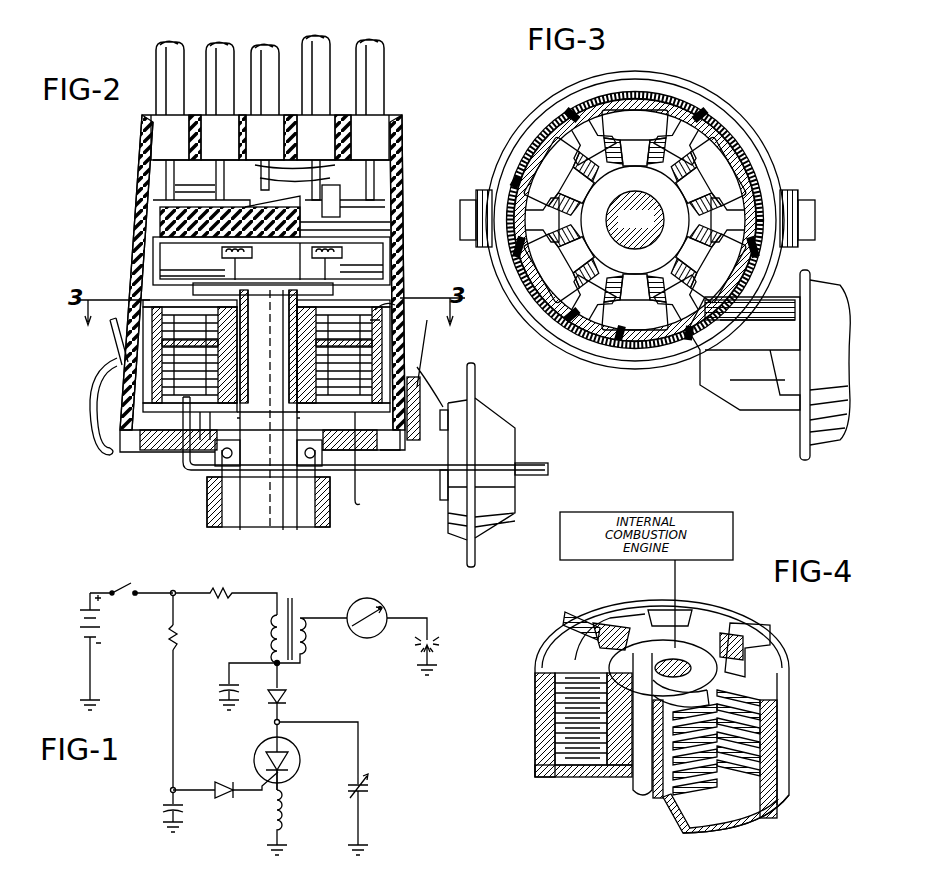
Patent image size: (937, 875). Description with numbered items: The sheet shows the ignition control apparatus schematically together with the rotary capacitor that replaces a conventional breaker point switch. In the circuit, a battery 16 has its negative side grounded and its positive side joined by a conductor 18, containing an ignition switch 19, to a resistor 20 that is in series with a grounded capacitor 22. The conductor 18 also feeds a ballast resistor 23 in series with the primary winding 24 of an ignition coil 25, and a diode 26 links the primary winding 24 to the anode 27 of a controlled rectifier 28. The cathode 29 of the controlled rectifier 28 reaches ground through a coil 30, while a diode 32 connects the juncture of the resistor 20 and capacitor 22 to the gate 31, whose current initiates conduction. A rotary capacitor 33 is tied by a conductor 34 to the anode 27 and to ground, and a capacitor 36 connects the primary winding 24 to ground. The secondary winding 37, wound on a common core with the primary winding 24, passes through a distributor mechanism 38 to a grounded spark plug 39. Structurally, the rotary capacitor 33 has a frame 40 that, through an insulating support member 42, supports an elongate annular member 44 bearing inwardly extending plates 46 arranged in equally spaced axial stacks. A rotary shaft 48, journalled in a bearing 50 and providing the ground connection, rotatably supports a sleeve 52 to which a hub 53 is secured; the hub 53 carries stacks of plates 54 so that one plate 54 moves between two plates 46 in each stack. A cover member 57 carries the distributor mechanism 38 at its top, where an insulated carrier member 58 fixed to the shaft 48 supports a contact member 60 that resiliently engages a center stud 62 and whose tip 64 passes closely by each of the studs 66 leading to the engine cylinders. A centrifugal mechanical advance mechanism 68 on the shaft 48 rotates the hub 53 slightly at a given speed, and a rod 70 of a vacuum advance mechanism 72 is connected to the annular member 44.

In FIG. 1, the battery 16 is at (78, 626).
In FIG. 1, the conductor 18 is at (173, 590).
In FIG. 1, the ignition switch 19 is at (125, 586).
In FIG. 1, the resistor 20 is at (166, 640).
In FIG. 1, the capacitor 22 is at (160, 805).
In FIG. 1, the ballast resistor 23 is at (221, 590).
In FIG. 1, the primary winding 24 is at (270, 628).
In FIG. 1, the ignition coil 25 is at (290, 597).
In FIG. 1, the diode 26 is at (290, 697).
In FIG. 1, the anode 27 is at (272, 722).
In FIG. 1, the controlled rectifier 28 is at (300, 752).
In FIG. 1, the cathode 29 is at (292, 780).
In FIG. 1, the coil 30 is at (285, 816).
In FIG. 1, the gate 31 is at (262, 778).
In FIG. 1, the diode 32 is at (224, 800).
In FIG. 1, the rotary capacitor 33 is at (371, 789).
In FIG. 2, the rotary capacitor 33 is at (116, 345).
In FIG. 3, the rotary capacitor 33 is at (716, 90).
In FIG. 4, the rotary capacitor 33 is at (741, 607).
In FIG. 1, the conductor 34 is at (360, 749).
In FIG. 2, the conductor 34 is at (363, 498).
In FIG. 1, the capacitor 36 is at (222, 683).
In FIG. 1, the secondary winding 37 is at (305, 641).
In FIG. 1, the distributor mechanism 38 is at (366, 597).
In FIG. 2, the distributor mechanism 38 is at (368, 218).
In FIG. 1, the spark plug 39 is at (445, 633).
In FIG. 2, the frame 40 is at (140, 452).
In FIG. 2, the insulating support member 42 is at (300, 416).
In FIG. 2, the annular member 44 is at (150, 378).
In FIG. 3, the annular member 44 is at (647, 108).
In FIG. 4, the annular member 44 is at (762, 764).
In FIG. 2, the plates 46 is at (380, 313).
In FIG. 3, the plates 46 is at (582, 135).
In FIG. 4, the plates 46 is at (625, 620).
In FIG. 2, the rotary shaft 48 is at (225, 523).
In FIG. 3, the rotary shaft 48 is at (648, 230).
In FIG. 4, the rotary shaft 48 is at (662, 655).
In FIG. 2, the bearing 50 is at (215, 460).
In FIG. 2, the sleeve 52 is at (241, 322).
In FIG. 3, the sleeve 52 is at (596, 221).
In FIG. 4, the sleeve 52 is at (632, 788).
In FIG. 2, the hub 53 is at (230, 372).
In FIG. 3, the hub 53 is at (612, 272).
In FIG. 4, the hub 53 is at (548, 737).
In FIG. 2, the plates 54 is at (190, 330).
In FIG. 3, the plates 54 is at (646, 147).
In FIG. 4, the plates 54 is at (598, 660).
In FIG. 2, the cover member 57 is at (140, 233).
In FIG. 3, the cover member 57 is at (514, 148).
In FIG. 2, the carrier member 58 is at (385, 250).
In FIG. 2, the contact member 60 is at (326, 211).
In FIG. 2, the center stud 62 is at (272, 166).
In FIG. 2, the tip 64 is at (195, 178).
In FIG. 2, the studs 66 is at (152, 178).
In FIG. 2, the mechanical advance mechanism 68 is at (200, 276).
In FIG. 2, the rod 70 is at (182, 466).
In FIG. 3, the rod 70 is at (738, 362).
In FIG. 2, the vacuum advance mechanism 72 is at (503, 443).
In FIG. 3, the vacuum advance mechanism 72 is at (806, 433).